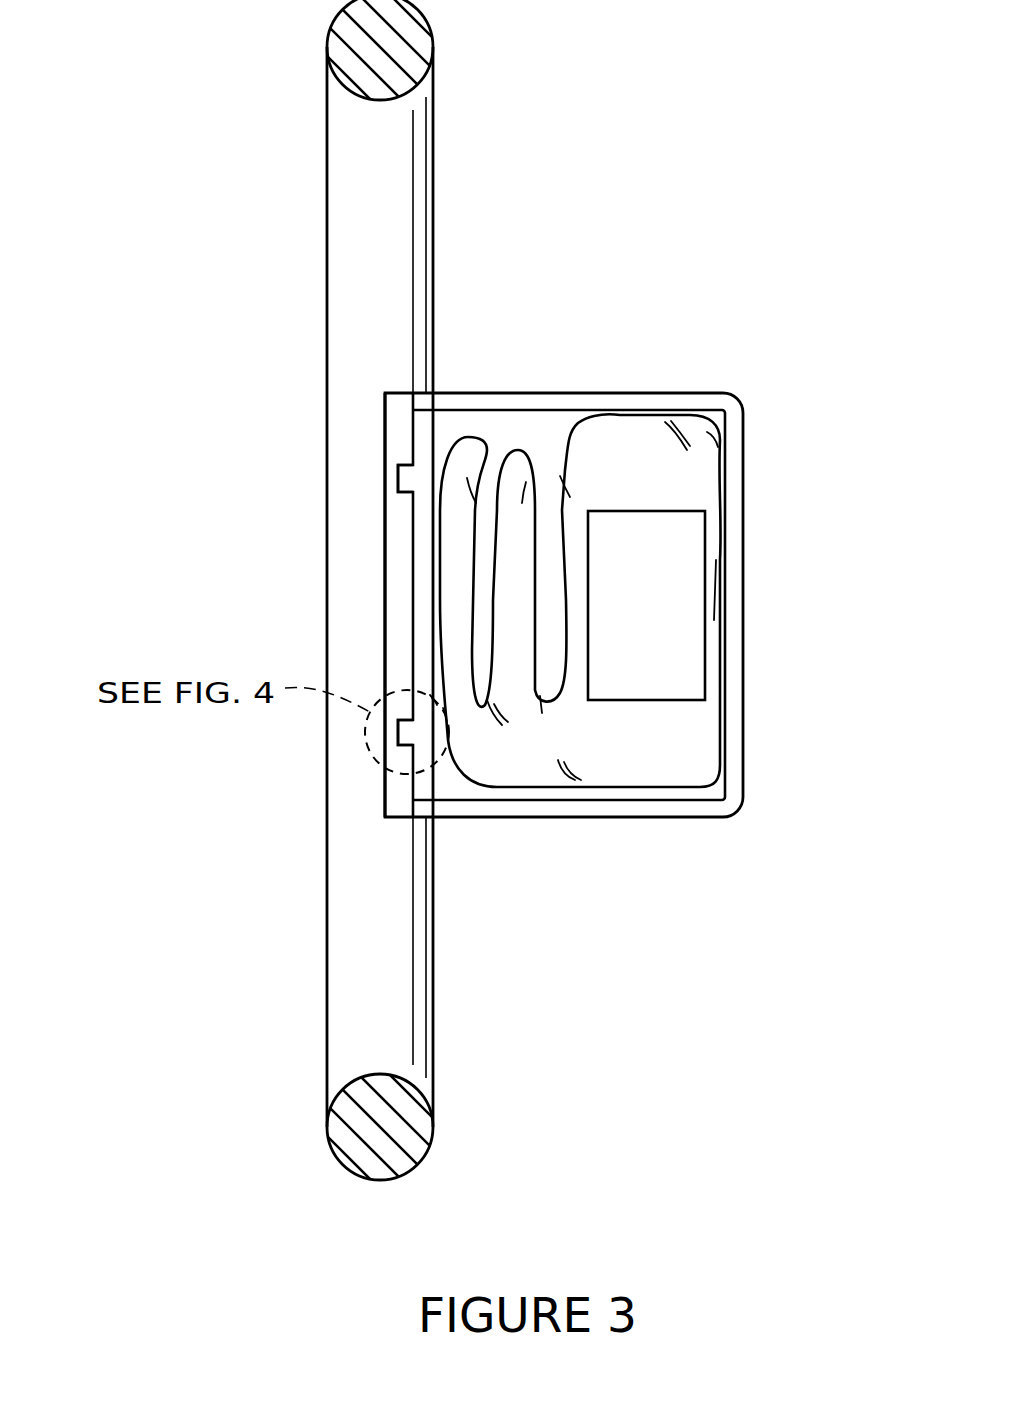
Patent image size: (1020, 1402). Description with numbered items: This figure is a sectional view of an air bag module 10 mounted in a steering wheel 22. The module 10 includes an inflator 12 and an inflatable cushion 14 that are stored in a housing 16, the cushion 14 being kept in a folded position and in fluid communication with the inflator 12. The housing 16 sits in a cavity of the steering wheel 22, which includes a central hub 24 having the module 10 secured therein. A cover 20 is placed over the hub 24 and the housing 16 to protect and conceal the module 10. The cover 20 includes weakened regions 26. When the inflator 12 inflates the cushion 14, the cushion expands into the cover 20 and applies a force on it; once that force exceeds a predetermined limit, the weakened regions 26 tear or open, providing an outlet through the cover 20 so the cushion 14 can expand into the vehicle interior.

The air bag module 10 is at (746, 549).
The inflator 12 is at (646, 605).
The inflatable cushion 14 is at (571, 433).
The housing 16 is at (538, 801).
The cover 20 is at (392, 615).
The steering wheel 22 is at (266, 512).
The central hub 24 is at (386, 510).
The weakened regions 26 is at (402, 477).